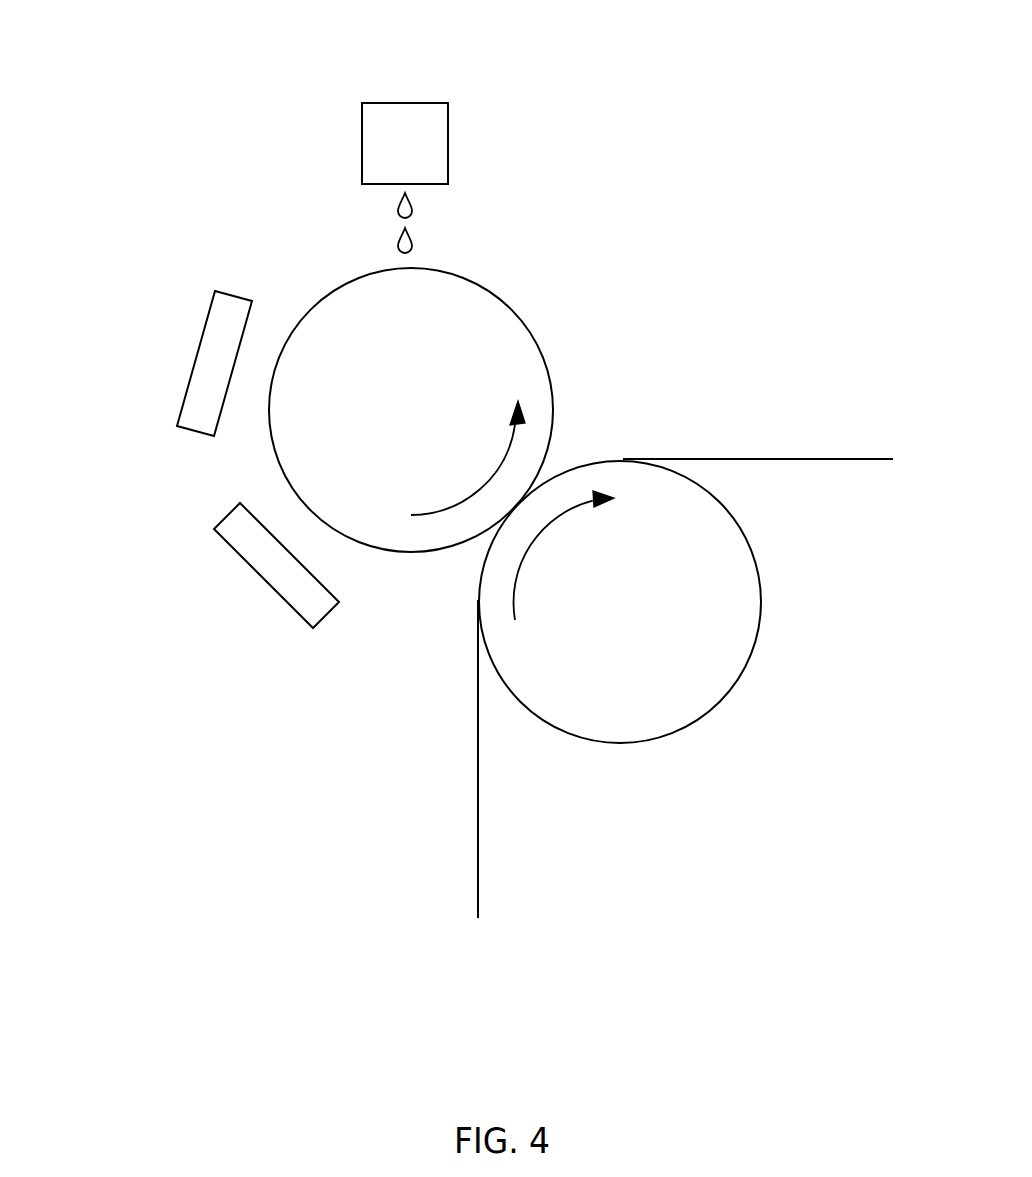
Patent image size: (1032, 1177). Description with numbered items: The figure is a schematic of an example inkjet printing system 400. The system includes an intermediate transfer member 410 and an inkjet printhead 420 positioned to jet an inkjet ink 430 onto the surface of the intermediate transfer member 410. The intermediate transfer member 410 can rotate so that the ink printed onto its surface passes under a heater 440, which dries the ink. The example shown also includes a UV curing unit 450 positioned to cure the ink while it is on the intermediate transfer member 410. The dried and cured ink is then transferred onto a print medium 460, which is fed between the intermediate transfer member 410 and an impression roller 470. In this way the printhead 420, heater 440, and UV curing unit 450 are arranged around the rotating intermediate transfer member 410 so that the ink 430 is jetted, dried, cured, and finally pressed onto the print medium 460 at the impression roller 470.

The inkjet printing system 400 is at (184, 74).
The intermediate transfer member 410 is at (487, 307).
The inkjet printhead 420 is at (437, 133).
The inkjet ink 430 is at (398, 208).
The heater 440 is at (212, 358).
The UV curing unit 450 is at (261, 562).
The print medium 460 is at (478, 717).
The impression roller 470 is at (732, 603).